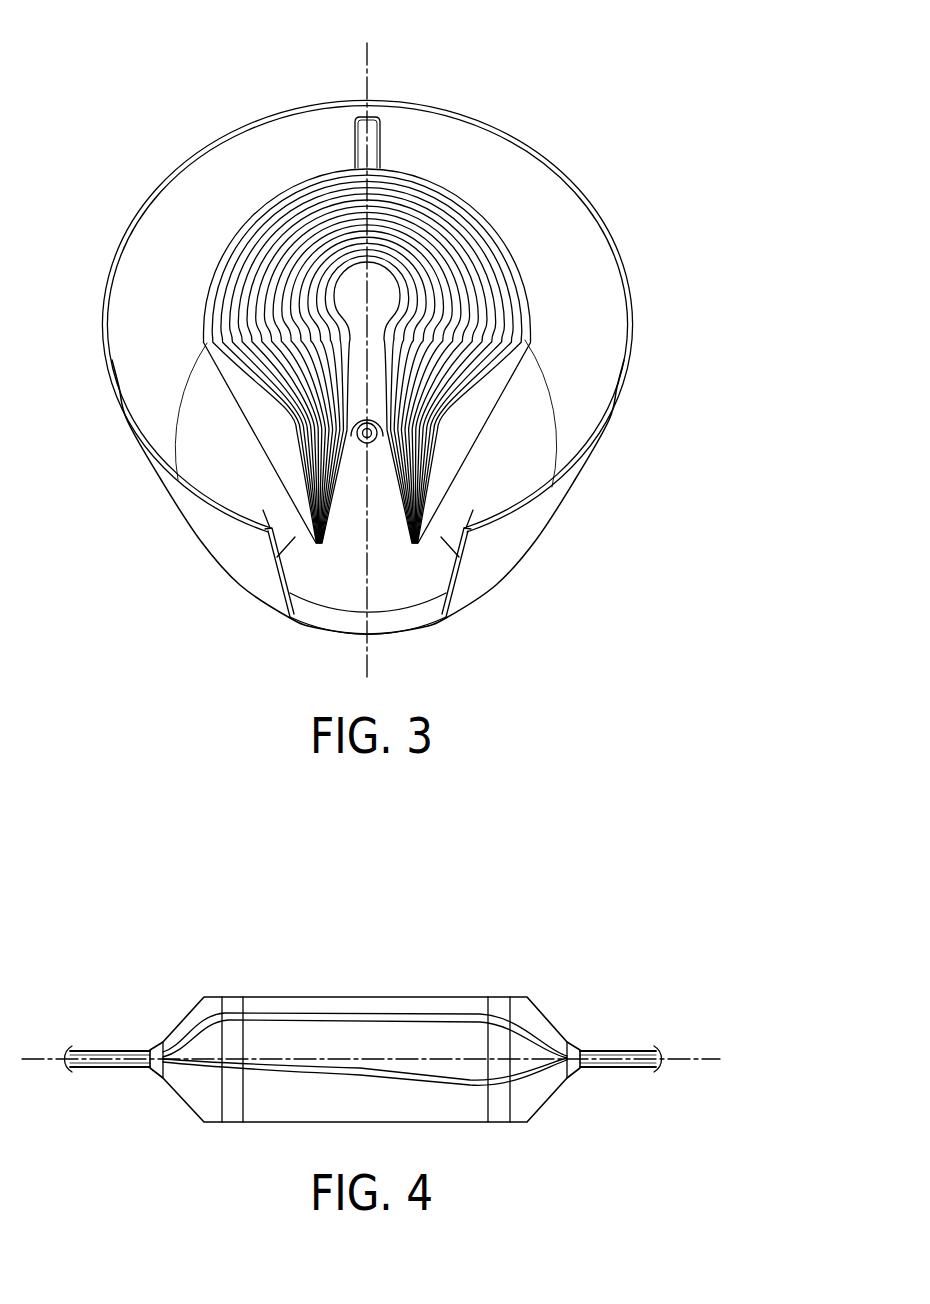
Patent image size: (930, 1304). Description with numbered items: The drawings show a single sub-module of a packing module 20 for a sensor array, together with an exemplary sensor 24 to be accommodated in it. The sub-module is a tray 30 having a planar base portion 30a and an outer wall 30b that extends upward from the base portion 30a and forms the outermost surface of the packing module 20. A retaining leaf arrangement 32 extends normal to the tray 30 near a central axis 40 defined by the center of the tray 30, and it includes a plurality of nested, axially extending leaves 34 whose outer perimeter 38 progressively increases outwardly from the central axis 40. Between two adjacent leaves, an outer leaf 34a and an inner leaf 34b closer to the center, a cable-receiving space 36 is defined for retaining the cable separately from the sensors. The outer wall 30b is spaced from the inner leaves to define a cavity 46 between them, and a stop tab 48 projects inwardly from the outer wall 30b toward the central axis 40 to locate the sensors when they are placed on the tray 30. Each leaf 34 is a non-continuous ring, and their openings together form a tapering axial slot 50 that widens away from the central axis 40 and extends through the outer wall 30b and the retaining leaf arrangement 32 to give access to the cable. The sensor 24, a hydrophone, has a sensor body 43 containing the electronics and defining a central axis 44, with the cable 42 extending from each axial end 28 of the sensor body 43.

In FIG. 3, the packing module 20 is at (192, 128).
In FIG. 3, the retaining leaf arrangement 32 is at (318, 210).
In FIG. 3, the central axis 40 is at (367, 57).
In FIG. 3, the inner leaf 34b is at (420, 183).
In FIG. 3, the outer leaf 34a is at (452, 192).
In FIG. 3, the cable-receiving space 36 is at (488, 208).
In FIG. 3, the leaves 34 is at (480, 258).
In FIG. 3, the cavity 46 is at (595, 295).
In FIG. 3, the tray 30 is at (525, 387).
In FIG. 3, the outer perimeter 38 is at (475, 432).
In FIG. 3, the outer wall 30b is at (525, 522).
In FIG. 3, the base portion 30a is at (400, 583).
In FIG. 3, the stop tab 48 is at (280, 535).
In FIG. 3, the axial slot 50 is at (346, 513).
In FIG. 4, the sensor 24 is at (306, 1006).
In FIG. 4, the sensor body 43 is at (438, 1037).
In FIG. 4, the axial end 28 is at (553, 1040).
In FIG. 4, the cable 42 is at (617, 1052).
In FIG. 4, the central axis 44 is at (700, 1060).